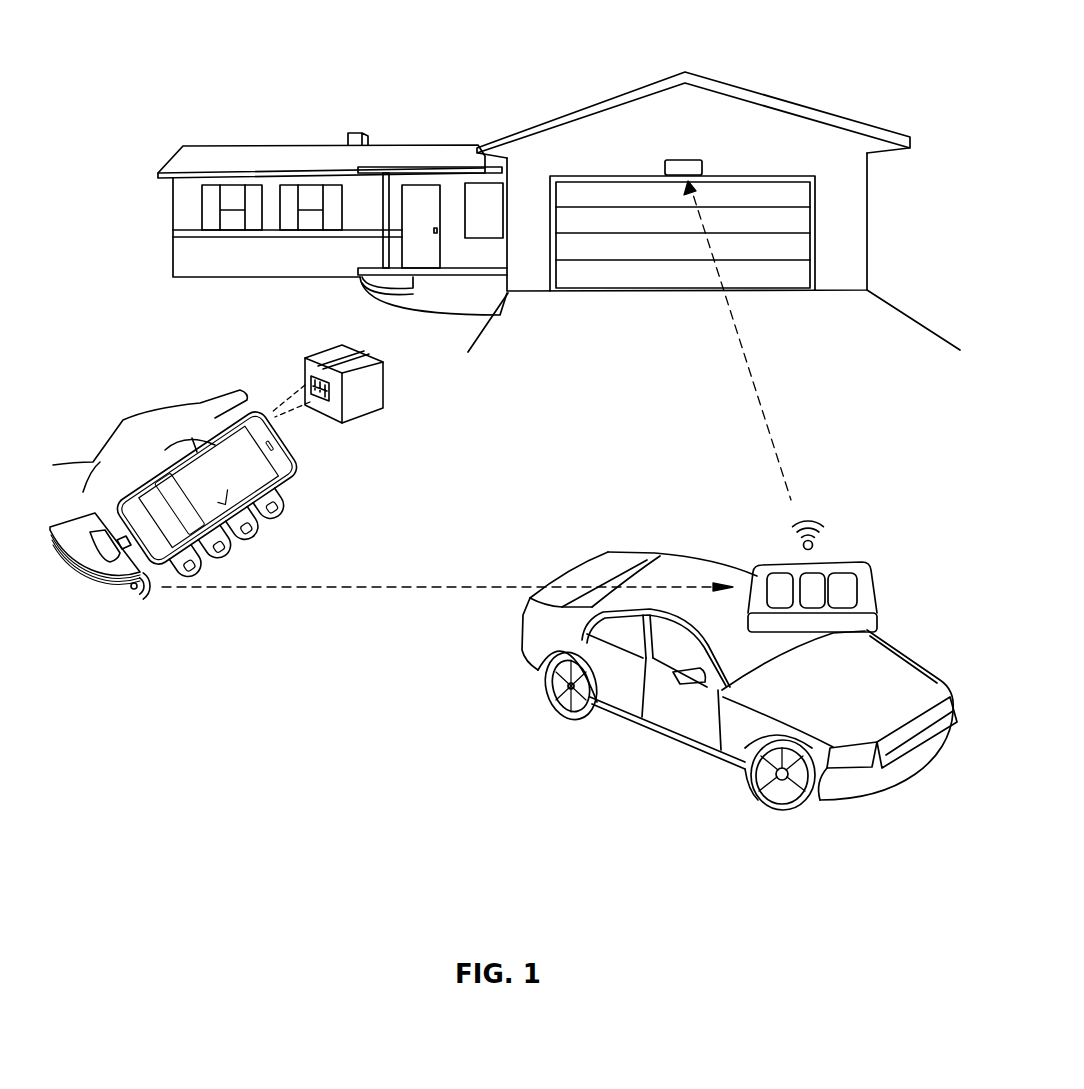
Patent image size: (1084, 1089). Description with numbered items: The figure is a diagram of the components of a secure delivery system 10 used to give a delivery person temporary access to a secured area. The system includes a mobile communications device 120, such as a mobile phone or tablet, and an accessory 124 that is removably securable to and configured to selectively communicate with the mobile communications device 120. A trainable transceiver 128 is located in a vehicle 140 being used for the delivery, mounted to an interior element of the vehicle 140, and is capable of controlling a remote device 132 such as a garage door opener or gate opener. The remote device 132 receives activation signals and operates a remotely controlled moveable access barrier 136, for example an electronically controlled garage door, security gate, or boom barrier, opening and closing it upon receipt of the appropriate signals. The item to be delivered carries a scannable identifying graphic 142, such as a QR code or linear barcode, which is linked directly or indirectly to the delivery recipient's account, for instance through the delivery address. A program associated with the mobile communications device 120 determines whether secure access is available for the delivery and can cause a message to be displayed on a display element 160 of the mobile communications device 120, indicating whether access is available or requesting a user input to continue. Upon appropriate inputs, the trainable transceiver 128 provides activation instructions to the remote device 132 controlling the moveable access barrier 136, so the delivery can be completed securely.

The secure delivery system 10 is at (303, 51).
The mobile communications device 120 is at (303, 472).
The accessory 124 is at (78, 575).
The trainable transceiver 128 is at (857, 570).
The remote device 132 is at (692, 167).
The moveable access barrier 136 is at (777, 217).
The vehicle 140 is at (868, 657).
The identifying graphic 142 is at (307, 383).
The display element 160 is at (190, 443).